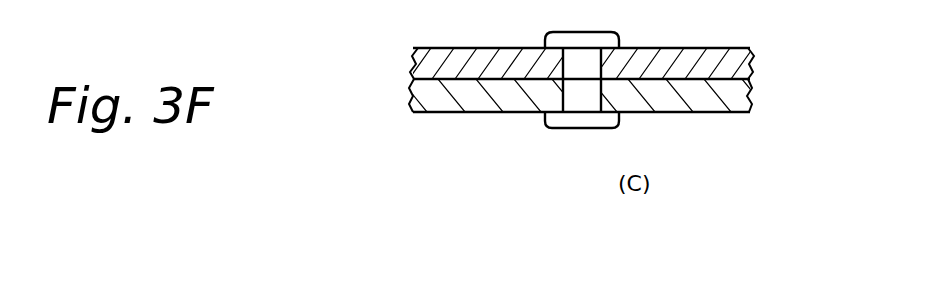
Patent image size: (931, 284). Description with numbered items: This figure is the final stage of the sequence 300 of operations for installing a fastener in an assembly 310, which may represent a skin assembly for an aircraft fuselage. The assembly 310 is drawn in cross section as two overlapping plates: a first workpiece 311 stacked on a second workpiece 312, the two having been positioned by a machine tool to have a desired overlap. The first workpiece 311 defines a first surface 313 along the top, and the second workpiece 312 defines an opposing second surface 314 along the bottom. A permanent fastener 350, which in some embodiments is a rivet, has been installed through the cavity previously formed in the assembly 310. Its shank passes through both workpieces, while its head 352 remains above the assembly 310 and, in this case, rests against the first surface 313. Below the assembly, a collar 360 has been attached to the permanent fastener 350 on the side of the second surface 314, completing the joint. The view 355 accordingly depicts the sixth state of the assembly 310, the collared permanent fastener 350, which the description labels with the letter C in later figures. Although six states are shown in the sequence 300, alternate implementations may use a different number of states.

The sequence 300 is at (334, 62).
The assembly 310 is at (440, 33).
The first workpiece 311 is at (748, 63).
The second workpiece 312 is at (748, 95).
The first surface 313 is at (717, 47).
The second surface 314 is at (716, 112).
The permanent fastener 350 is at (518, 143).
The head 352 is at (583, 32).
The view 355 is at (602, 193).
The collar 360 is at (613, 122).